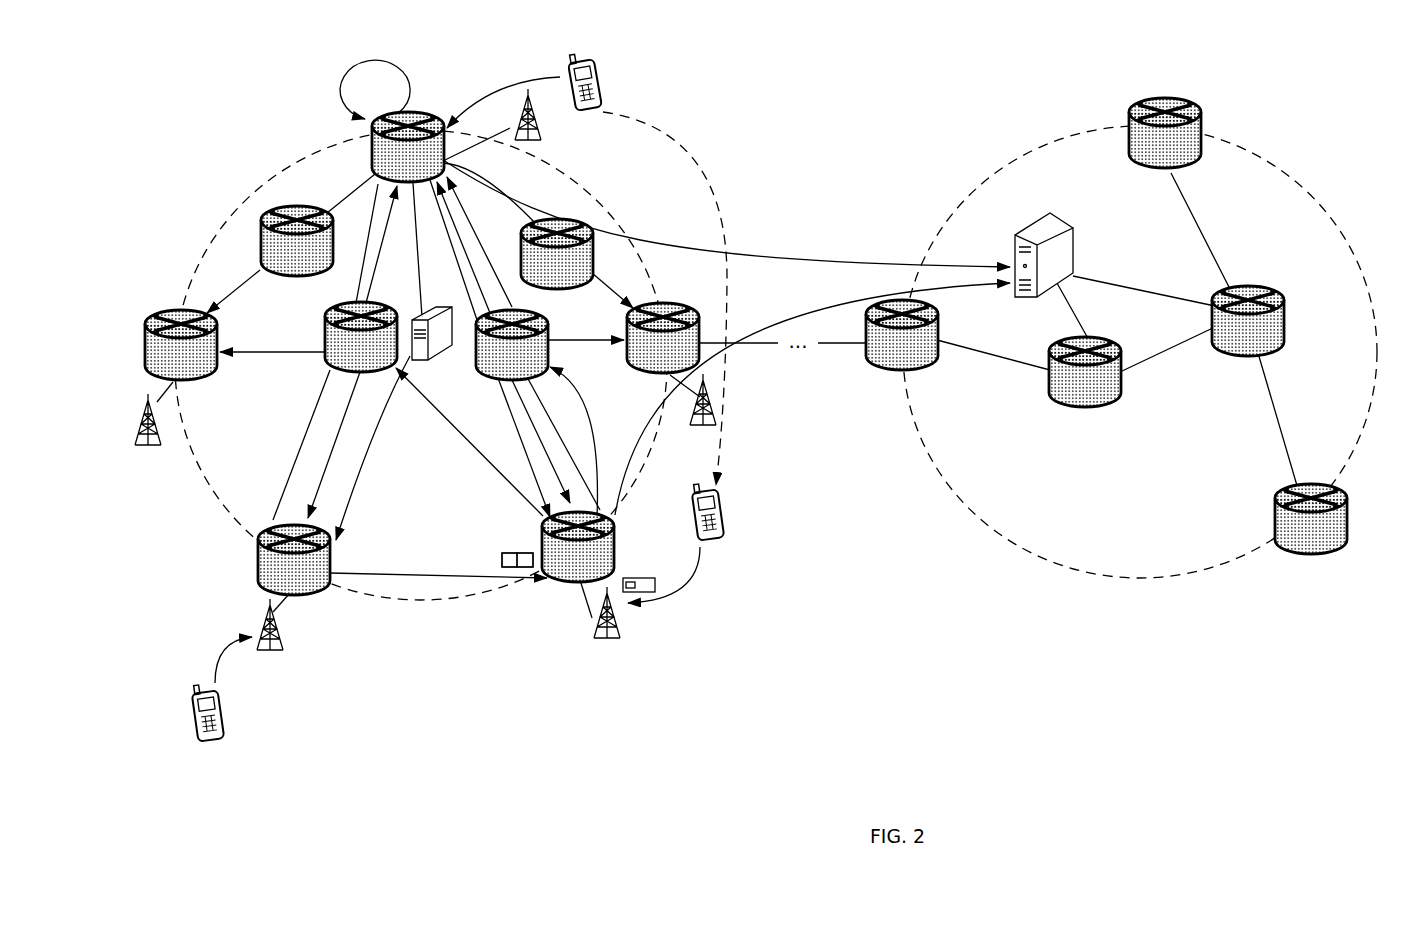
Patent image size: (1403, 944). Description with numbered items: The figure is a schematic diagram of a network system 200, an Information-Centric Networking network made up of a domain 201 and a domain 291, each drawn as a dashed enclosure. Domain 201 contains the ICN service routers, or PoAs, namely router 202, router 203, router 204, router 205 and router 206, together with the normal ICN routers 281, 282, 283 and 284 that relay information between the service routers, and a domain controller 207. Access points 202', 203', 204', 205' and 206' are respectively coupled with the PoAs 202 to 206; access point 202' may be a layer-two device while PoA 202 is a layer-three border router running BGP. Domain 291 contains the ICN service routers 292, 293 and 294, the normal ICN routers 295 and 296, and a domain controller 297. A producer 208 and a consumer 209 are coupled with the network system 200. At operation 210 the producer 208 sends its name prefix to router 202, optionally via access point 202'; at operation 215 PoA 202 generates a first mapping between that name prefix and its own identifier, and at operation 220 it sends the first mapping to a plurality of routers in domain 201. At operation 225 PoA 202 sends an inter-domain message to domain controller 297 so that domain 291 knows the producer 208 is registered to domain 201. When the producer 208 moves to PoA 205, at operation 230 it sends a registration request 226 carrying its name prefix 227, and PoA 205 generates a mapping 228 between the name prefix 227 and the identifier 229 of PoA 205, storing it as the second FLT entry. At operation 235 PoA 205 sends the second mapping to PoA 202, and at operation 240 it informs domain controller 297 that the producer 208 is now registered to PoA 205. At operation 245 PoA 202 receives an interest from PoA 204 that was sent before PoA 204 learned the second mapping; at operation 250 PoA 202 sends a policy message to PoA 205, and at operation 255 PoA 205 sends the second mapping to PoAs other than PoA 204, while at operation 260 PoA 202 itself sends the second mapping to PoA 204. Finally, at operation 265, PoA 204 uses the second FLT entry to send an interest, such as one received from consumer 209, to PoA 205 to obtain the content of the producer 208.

The network system 200 is at (897, 38).
The domain 201 is at (267, 187).
The router 202 is at (408, 147).
The access point 202' is at (507, 124).
The router 203 is at (181, 345).
The access point 203' is at (152, 424).
The router 204 is at (294, 560).
The access point 204' is at (272, 632).
The router 205 is at (578, 547).
The access point 205' is at (603, 628).
The router 206 is at (663, 338).
The access point 206' is at (695, 409).
The domain controller 207 is at (432, 344).
The producer 208 is at (661, 295).
The consumer 209 is at (230, 690).
The operation 210 is at (503, 102).
The operation 215 is at (375, 83).
The operation 220 is at (420, 340).
The operation 225 is at (726, 213).
The registration request 226 is at (641, 580).
The name prefix 227 is at (510, 556).
The mapping 228 is at (500, 558).
The identifier 229 is at (522, 553).
The operation 230 is at (668, 575).
The operation 235 is at (523, 343).
The operation 240 is at (812, 399).
The operation 245 is at (325, 352).
The operation 250 is at (487, 348).
The operation 255 is at (422, 415).
The operation 260 is at (379, 361).
The operation 265 is at (438, 588).
The router 281 is at (297, 241).
The router 282 is at (361, 337).
The router 283 is at (512, 345).
The router 284 is at (557, 254).
The domain 291 is at (1282, 175).
The router 292 is at (1165, 133).
The router 293 is at (902, 335).
The router 294 is at (1311, 519).
The router 295 is at (1085, 372).
The router 296 is at (1248, 321).
The domain controller 297 is at (1056, 242).